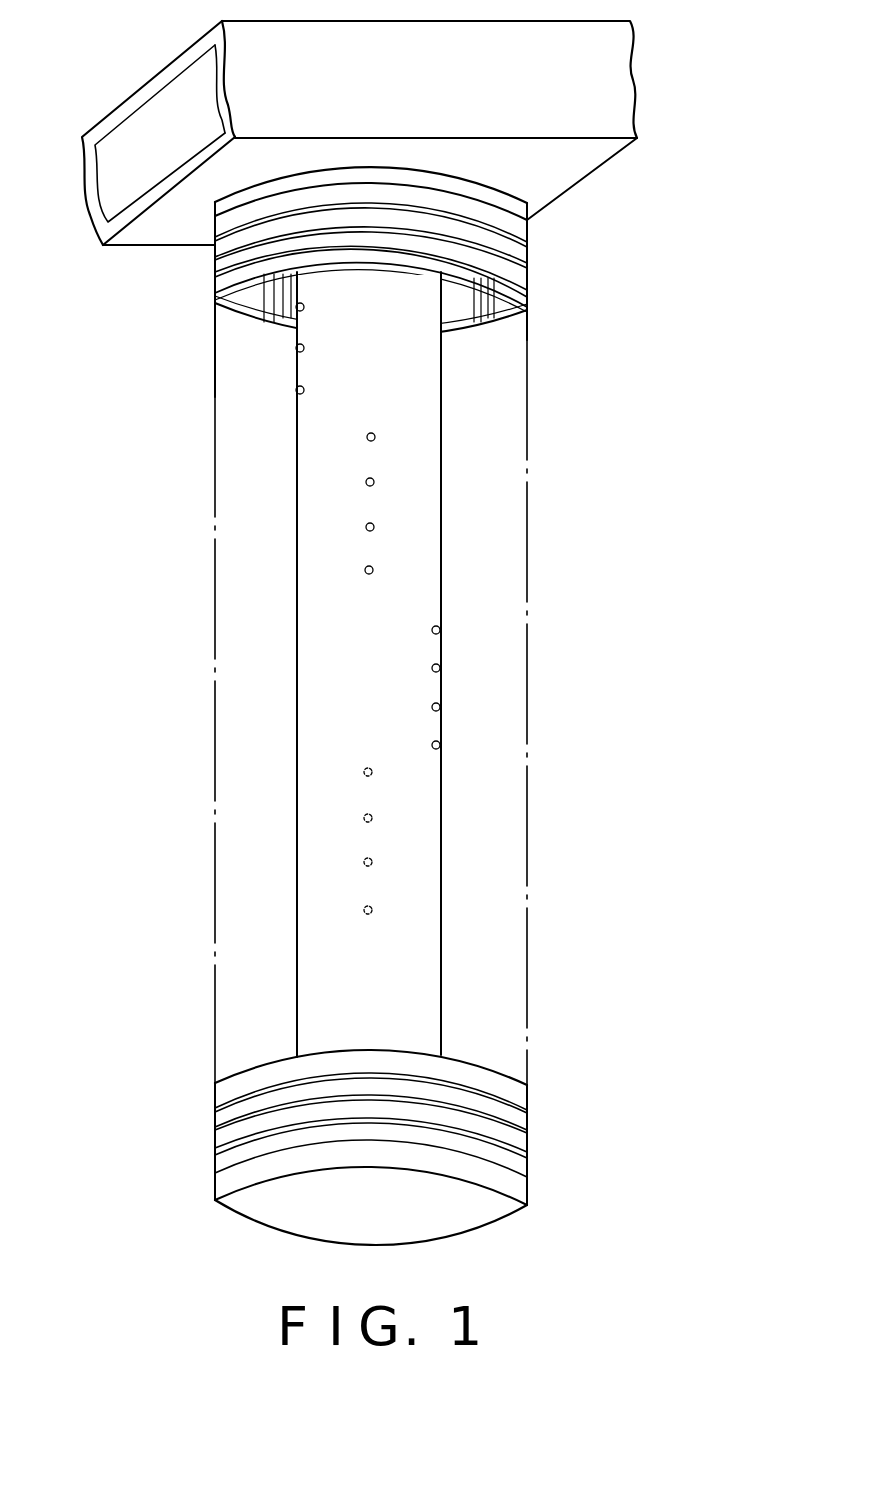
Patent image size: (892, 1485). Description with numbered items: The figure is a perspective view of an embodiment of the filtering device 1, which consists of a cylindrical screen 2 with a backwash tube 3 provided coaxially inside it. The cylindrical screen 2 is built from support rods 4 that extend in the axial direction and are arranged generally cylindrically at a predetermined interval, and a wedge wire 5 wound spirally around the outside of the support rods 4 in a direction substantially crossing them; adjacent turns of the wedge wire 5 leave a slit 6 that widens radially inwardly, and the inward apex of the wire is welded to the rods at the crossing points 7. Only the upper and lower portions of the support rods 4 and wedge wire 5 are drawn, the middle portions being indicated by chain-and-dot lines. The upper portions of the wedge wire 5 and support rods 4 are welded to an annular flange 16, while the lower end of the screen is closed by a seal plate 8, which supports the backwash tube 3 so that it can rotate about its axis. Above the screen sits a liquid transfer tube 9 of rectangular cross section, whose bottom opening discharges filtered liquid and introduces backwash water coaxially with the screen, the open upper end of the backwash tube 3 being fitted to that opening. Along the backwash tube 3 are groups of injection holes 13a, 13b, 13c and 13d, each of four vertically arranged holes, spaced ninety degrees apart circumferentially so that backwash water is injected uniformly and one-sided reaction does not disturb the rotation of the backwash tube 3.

The filtering device 1 is at (387, 633).
The cylindrical screen 2 is at (528, 812).
The backwash tube 3 is at (318, 658).
The support rods 4 is at (500, 313).
The wedge wire 5 is at (527, 272).
The slit 6 is at (528, 243).
The crossing points 7 is at (213, 207).
The seal plate 8 is at (515, 1188).
The liquid transfer tube 9 is at (622, 77).
The group of injection holes 13a is at (297, 393).
The group of injection holes 13b is at (376, 436).
The group of injection holes 13c is at (433, 621).
The group of injection holes 13d is at (362, 910).
The annular flange 16 is at (495, 198).